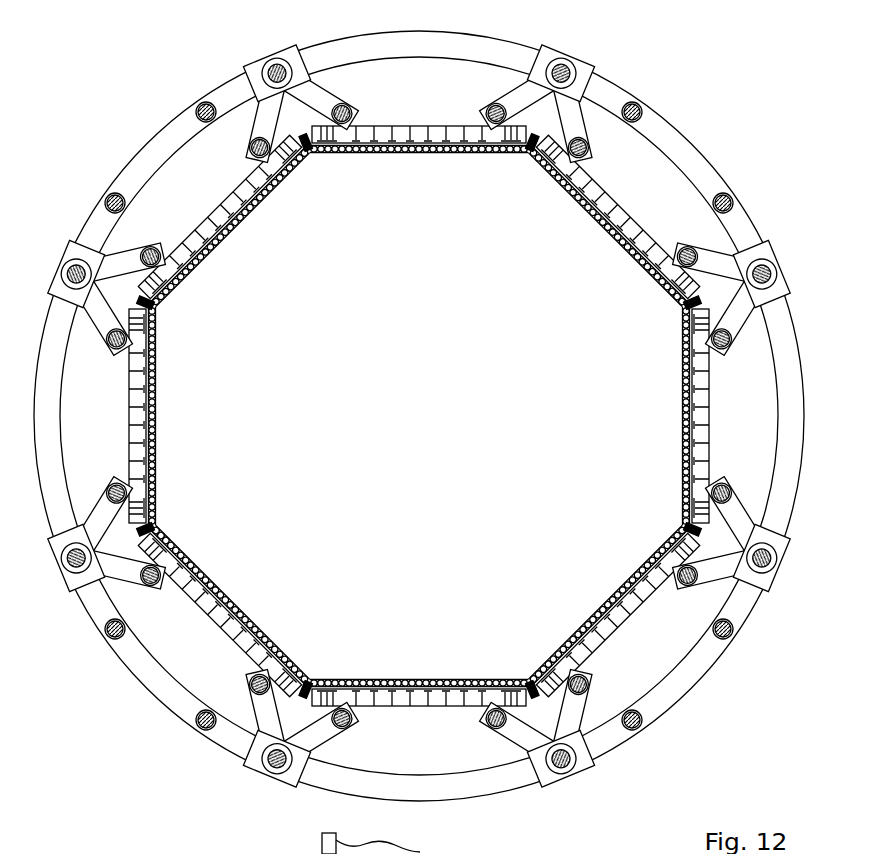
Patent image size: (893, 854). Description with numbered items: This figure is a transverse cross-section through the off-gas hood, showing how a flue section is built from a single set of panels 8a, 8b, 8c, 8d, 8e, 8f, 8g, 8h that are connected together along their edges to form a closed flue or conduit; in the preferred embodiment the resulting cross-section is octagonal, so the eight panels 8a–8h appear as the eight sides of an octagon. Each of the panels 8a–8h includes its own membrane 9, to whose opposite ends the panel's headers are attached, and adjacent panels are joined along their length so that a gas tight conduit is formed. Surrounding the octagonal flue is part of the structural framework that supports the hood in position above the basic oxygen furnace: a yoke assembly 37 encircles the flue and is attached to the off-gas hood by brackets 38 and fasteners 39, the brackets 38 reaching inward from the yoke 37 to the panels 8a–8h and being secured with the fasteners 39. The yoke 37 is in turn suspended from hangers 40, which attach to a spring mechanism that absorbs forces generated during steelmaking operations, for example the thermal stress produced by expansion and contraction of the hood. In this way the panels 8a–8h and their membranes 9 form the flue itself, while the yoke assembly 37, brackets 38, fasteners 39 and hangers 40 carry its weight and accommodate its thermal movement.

The panel 8a is at (632, 617).
The panel 8b is at (430, 712).
The panel 8c is at (205, 614).
The panel 8d is at (134, 452).
The panel 8e is at (222, 196).
The panel 8f is at (410, 125).
The panel 8g is at (648, 228).
The panel 8h is at (714, 424).
The membrane 9 is at (170, 300).
The yoke assembly 37 is at (170, 696).
The bracket 38 is at (252, 118).
The fastener 39 is at (270, 62).
The hanger 40 is at (200, 103).